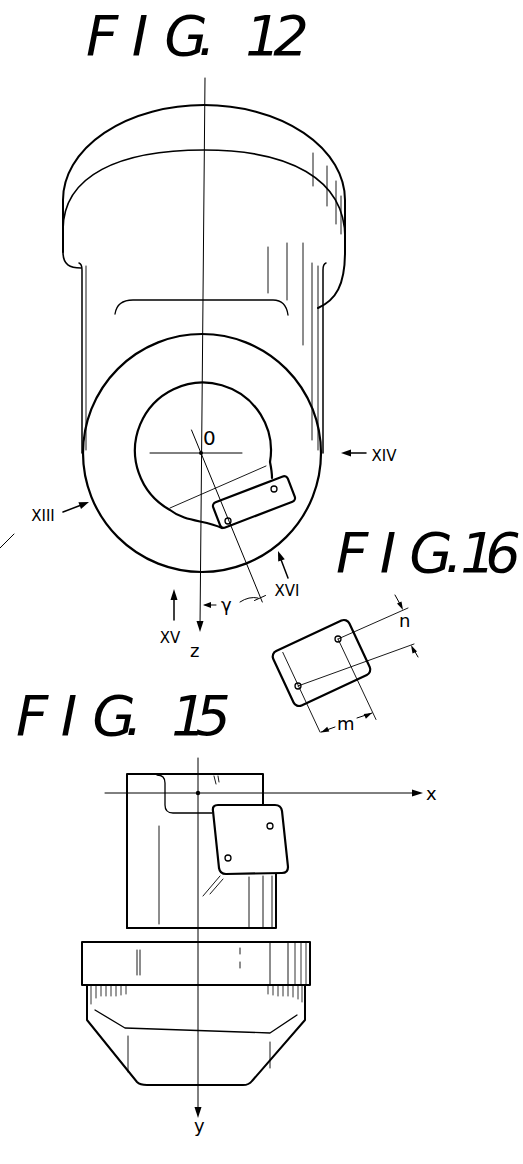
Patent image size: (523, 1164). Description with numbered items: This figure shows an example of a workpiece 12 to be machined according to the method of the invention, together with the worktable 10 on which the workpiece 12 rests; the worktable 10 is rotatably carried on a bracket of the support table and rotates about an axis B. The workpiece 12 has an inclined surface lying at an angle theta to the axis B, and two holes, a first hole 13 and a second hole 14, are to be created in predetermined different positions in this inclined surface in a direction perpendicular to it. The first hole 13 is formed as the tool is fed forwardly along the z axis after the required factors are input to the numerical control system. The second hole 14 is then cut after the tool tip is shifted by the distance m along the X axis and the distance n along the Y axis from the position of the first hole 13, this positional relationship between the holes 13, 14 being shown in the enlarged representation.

In FIG. 12, the worktable 10 is at (298, 401).
In FIG. 15, the worktable 10 is at (288, 945).
In FIG. 12, the workpiece 12 is at (257, 435).
In FIG. 15, the workpiece 12 is at (130, 838).
In FIG. 12, the first hole 13 is at (229, 524).
In FIG. 16, the first hole 13 is at (295, 688).
In FIG. 15, the first hole 13 is at (225, 860).
In FIG. 12, the second hole 14 is at (277, 491).
In FIG. 16, the second hole 14 is at (338, 637).
In FIG. 15, the second hole 14 is at (273, 825).